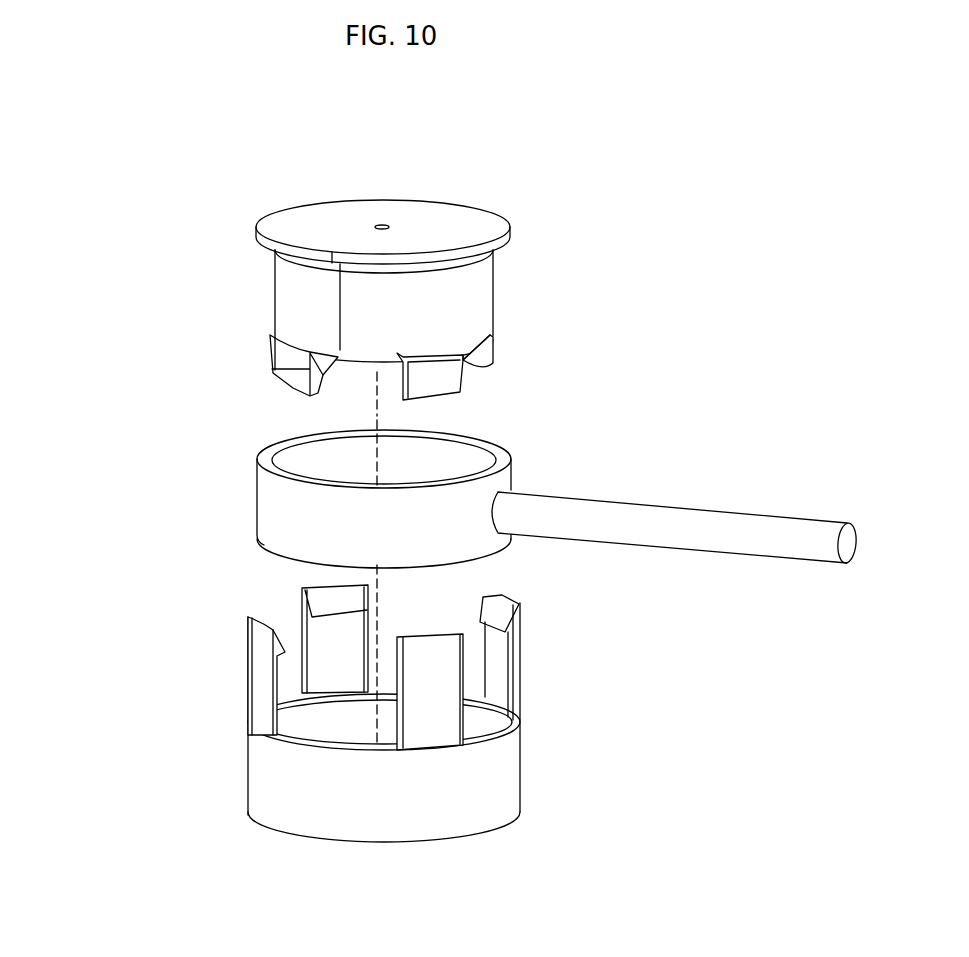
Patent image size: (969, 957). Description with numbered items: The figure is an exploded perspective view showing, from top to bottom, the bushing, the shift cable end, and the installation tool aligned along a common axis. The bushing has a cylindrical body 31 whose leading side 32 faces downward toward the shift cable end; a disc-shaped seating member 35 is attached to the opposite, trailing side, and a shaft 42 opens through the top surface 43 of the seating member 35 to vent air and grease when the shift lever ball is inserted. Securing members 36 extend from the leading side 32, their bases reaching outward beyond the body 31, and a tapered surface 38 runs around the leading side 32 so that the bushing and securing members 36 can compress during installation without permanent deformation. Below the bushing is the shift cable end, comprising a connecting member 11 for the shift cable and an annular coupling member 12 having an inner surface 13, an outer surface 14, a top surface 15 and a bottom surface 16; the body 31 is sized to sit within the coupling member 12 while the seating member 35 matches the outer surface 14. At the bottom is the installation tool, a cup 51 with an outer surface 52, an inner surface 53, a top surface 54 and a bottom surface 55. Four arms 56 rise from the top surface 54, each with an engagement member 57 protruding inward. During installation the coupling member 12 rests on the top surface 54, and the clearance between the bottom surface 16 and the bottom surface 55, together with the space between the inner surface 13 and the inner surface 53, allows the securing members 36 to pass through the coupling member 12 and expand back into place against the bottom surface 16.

The connecting member 11 is at (628, 515).
The coupling member 12 is at (512, 457).
The inner surface 13 is at (470, 440).
The outer surface 14 is at (272, 518).
The top surface 15 is at (260, 459).
The bottom surface 16 is at (283, 558).
The body 31 is at (292, 301).
The leading side 32 is at (277, 378).
The seating member 35 is at (503, 255).
The securing members 36 is at (450, 373).
The tapered surface 38 is at (307, 360).
The shaft 42 is at (386, 225).
The top surface 43 is at (473, 225).
The cup 51 is at (247, 760).
The outer surface 52 is at (477, 800).
The inner surface 53 is at (330, 720).
The top surface 54 is at (513, 728).
The bottom surface 55 is at (295, 838).
The arms 56 is at (522, 658).
The engagement member 57 is at (495, 613).